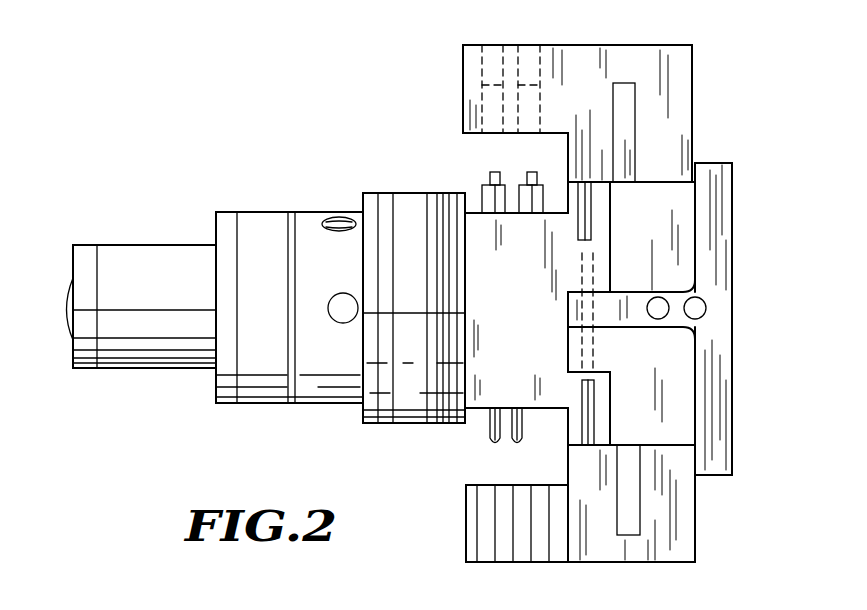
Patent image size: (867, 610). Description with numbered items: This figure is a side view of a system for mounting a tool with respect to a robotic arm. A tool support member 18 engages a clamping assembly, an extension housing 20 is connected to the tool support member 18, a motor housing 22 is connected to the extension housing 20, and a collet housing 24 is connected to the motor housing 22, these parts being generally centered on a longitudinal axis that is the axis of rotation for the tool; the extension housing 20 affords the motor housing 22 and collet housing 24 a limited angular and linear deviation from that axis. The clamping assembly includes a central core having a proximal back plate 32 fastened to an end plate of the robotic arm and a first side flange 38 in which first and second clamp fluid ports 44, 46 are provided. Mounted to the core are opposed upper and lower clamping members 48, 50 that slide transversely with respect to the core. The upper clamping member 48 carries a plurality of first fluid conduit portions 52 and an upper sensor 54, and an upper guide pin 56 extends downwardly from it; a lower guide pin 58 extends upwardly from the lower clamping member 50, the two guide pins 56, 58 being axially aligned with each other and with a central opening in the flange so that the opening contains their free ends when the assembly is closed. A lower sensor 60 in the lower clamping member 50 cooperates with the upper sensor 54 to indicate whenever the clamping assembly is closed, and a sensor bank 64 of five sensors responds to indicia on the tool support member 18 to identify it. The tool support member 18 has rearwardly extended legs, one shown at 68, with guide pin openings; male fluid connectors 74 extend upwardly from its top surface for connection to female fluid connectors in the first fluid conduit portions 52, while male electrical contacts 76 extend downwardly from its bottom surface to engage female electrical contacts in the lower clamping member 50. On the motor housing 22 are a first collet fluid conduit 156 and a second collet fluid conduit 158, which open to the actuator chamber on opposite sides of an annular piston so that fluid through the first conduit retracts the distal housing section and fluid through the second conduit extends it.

The tool support member 18 is at (525, 285).
The extension housing 20 is at (410, 200).
The motor housing 22 is at (304, 218).
The collet housing 24 is at (160, 258).
The back plate 32 is at (725, 200).
The first side flange 38 is at (630, 327).
The first clamp fluid port 44 is at (657, 297).
The second clamp fluid port 46 is at (708, 308).
The upper clamping member 48 is at (680, 82).
The lower clamping member 50 is at (683, 523).
The first fluid conduit portions 52 is at (500, 48).
The upper sensor 54 is at (627, 90).
The upper guide pin 56 is at (592, 218).
The lower guide pin 58 is at (597, 410).
The lower sensor 60 is at (628, 540).
The sensor bank 64 is at (527, 553).
The leg 68 is at (580, 352).
The male fluid connectors 74 is at (492, 182).
The male electrical contacts 76 is at (488, 437).
The first collet fluid conduit 156 is at (340, 213).
The second collet fluid conduit 158 is at (340, 323).